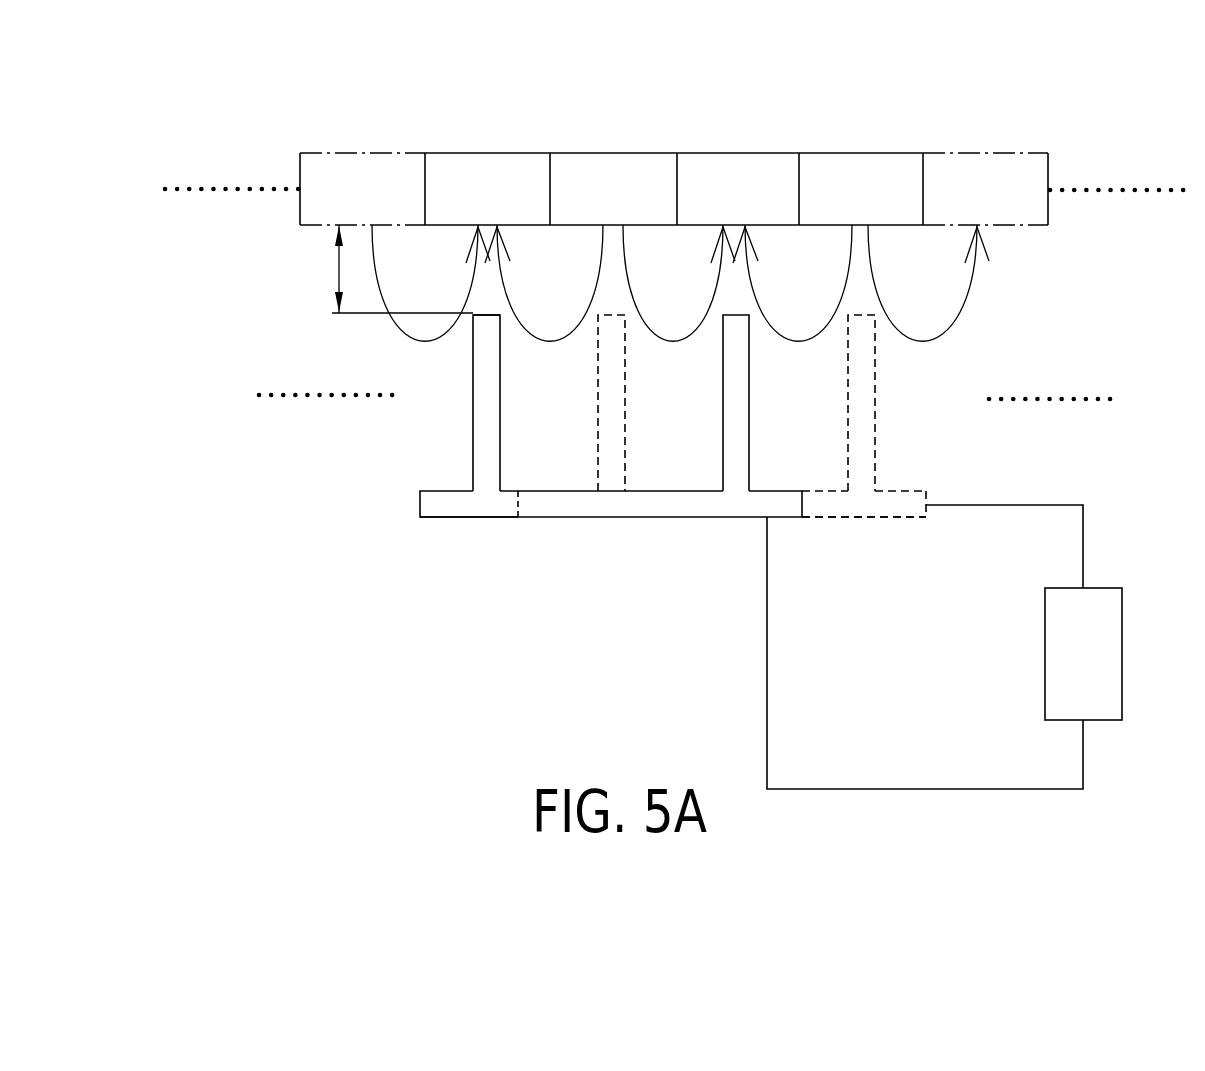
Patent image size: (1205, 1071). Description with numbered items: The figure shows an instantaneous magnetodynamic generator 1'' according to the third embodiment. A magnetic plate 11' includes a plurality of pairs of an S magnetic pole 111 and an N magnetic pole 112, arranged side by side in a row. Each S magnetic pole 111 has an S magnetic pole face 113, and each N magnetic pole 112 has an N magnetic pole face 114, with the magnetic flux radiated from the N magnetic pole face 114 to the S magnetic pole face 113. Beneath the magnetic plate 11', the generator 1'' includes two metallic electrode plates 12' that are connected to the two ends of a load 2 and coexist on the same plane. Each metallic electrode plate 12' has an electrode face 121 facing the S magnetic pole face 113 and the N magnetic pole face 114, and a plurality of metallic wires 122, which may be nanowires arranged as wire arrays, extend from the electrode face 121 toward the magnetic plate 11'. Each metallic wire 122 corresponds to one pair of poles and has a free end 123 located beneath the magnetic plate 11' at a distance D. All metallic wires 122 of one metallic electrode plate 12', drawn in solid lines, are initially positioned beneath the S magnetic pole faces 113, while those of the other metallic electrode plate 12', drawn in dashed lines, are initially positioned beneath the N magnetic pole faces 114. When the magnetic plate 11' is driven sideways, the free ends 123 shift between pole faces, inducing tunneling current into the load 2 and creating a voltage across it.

The magnetic plate 11' is at (674, 119).
The S magnetic pole 111 is at (524, 162).
The N magnetic pole 112 is at (641, 158).
The S magnetic pole face 113 is at (453, 225).
The N magnetic pole face 114 is at (567, 225).
The distance D is at (391, 269).
The instantaneous magnetodynamic generator 1'' is at (584, 462).
The electrode face 121 is at (447, 490).
The metallic wire 122 is at (605, 363).
The free end 123 is at (483, 316).
The metallic electrode plate 12' is at (665, 565).
The load 2 is at (1107, 592).